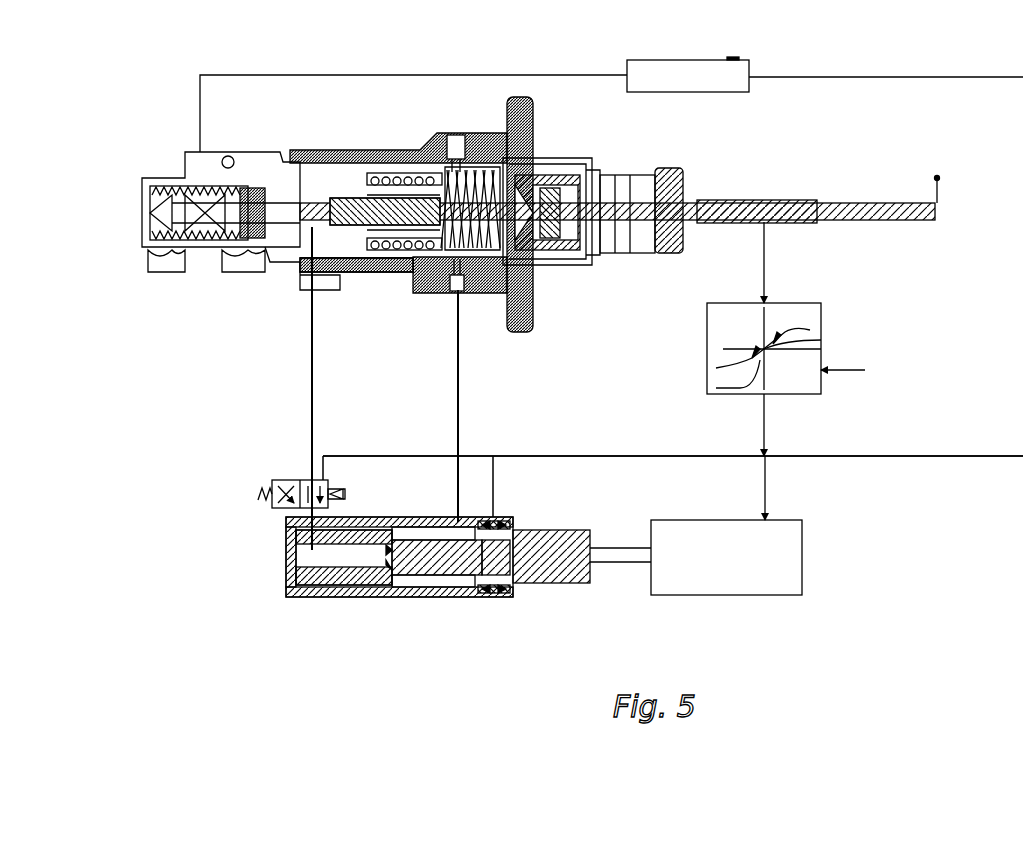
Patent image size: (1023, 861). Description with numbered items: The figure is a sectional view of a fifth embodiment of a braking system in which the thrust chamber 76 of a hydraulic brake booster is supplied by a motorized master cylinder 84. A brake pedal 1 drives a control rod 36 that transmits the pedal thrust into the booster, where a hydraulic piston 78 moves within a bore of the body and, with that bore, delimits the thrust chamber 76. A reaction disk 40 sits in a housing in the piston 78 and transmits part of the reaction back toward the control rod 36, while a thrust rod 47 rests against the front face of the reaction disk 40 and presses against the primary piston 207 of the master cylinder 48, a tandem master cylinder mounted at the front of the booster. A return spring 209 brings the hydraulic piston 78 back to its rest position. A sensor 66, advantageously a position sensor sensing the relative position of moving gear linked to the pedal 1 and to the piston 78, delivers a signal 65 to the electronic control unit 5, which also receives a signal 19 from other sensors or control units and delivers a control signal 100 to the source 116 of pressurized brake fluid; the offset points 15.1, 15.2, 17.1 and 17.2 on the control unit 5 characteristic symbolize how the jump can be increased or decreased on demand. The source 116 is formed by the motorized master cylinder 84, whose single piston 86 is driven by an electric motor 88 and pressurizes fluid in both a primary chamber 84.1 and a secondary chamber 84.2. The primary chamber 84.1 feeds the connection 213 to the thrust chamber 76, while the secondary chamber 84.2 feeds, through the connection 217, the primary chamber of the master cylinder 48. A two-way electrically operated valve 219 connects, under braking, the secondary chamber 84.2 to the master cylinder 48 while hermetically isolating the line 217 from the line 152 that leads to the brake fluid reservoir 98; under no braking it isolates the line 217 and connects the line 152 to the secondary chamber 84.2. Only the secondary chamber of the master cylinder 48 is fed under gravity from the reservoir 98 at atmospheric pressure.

The brake pedal 1 is at (945, 226).
The electronic control unit 5 is at (765, 364).
The point 15.1 is at (716, 388).
The point 15.2 is at (716, 369).
The point 17.1 is at (821, 340).
The point 17.2 is at (810, 330).
The signal 19 is at (860, 372).
The control rod 36 is at (868, 222).
The reaction disk 40 is at (536, 170).
The thrust rod 47 is at (398, 178).
The master cylinder 48 is at (210, 263).
The signal 65 is at (766, 260).
The sensor 66 is at (776, 200).
The thrust chamber 76 is at (466, 283).
The hydraulic piston 78 is at (572, 272).
The motorized master cylinder 84 is at (397, 577).
The primary chamber 84.1 is at (425, 577).
The secondary chamber 84.2 is at (327, 558).
The piston 86 is at (553, 585).
The motor 88 is at (727, 598).
The brake fluid reservoir 98 is at (651, 60).
The control signal 100 is at (767, 484).
The source of pressurized brake fluid 116 is at (578, 635).
The line 152 is at (975, 462).
The primary piston 207 is at (415, 255).
The return spring 209 is at (513, 300).
The connection 213 is at (461, 375).
The connection 217 is at (312, 390).
The electrically operated valve 219 is at (258, 505).